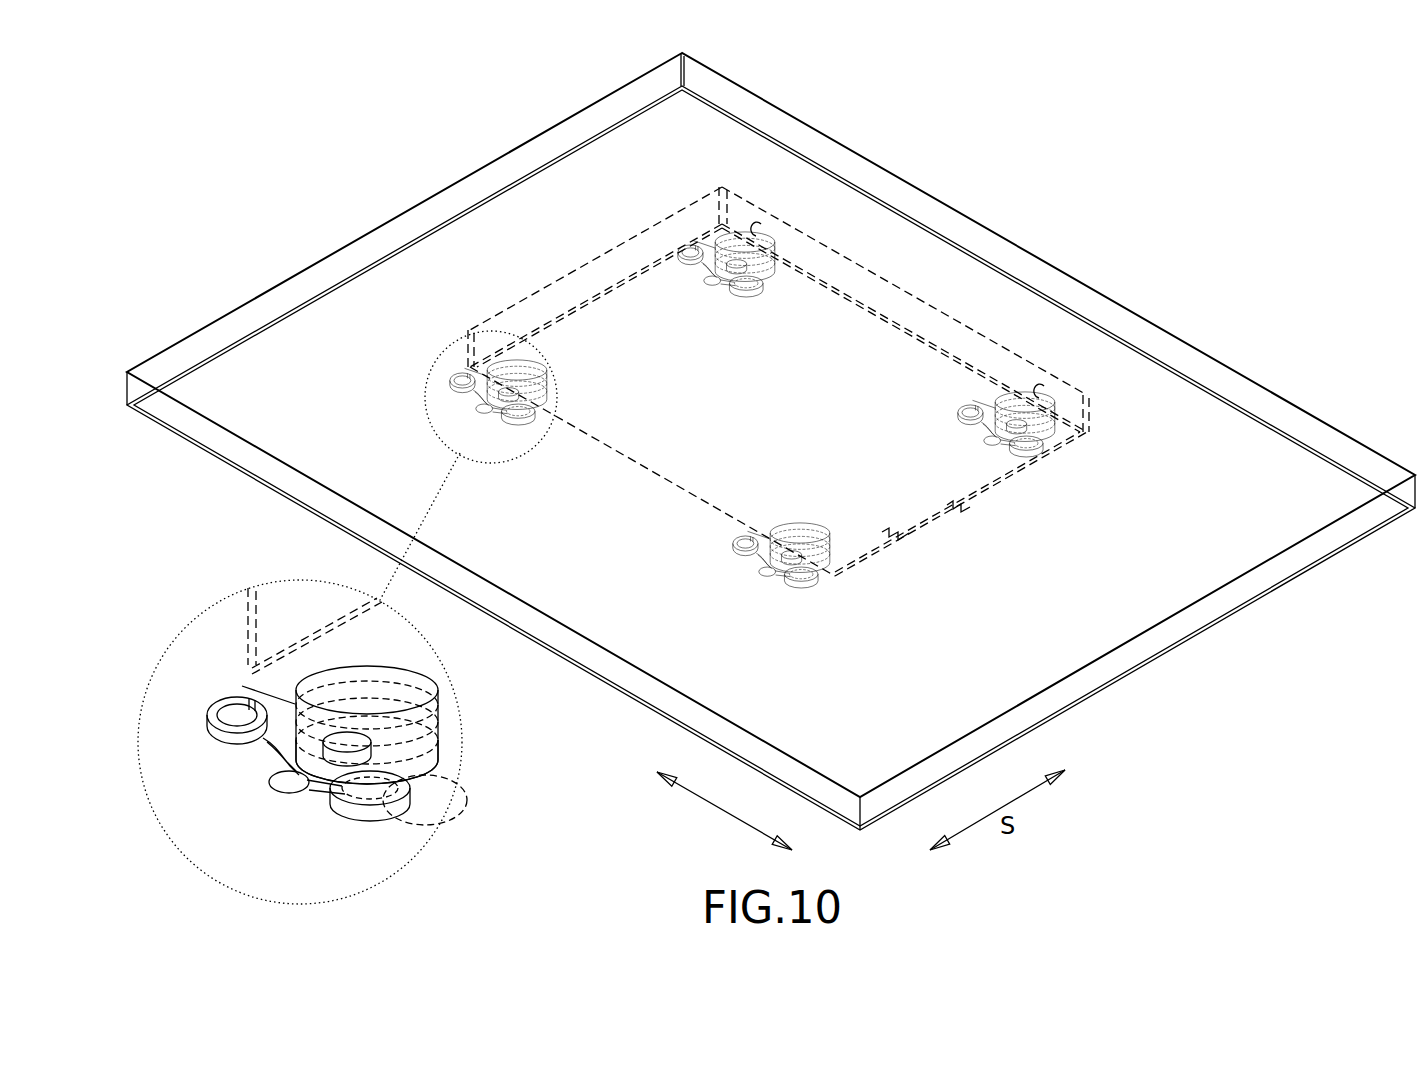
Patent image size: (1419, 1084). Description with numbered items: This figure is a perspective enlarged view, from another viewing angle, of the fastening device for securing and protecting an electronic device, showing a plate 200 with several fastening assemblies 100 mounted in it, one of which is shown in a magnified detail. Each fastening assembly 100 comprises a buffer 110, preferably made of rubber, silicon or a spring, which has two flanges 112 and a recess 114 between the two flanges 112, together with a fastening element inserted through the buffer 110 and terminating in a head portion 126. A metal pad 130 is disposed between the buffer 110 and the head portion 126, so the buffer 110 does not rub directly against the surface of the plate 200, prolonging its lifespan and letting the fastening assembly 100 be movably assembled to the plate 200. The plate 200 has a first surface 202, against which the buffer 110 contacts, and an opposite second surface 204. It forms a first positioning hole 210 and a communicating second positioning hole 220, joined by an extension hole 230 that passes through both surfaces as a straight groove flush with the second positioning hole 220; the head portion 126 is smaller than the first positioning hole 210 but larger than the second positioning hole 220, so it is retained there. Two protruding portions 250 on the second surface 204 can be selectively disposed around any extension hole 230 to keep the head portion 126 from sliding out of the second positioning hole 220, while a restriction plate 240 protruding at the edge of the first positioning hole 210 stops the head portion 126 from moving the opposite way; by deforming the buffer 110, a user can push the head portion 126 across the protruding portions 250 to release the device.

The fastening assembly 100 is at (254, 739).
The buffer 110 is at (454, 728).
The flanges 112 is at (438, 712).
The recess 114 is at (440, 732).
The head portion 126 is at (350, 807).
The pad 130 is at (437, 808).
The plate 200 is at (766, 473).
The first surface 202 is at (1253, 308).
The second surface 204 is at (1117, 608).
The first positioning hole 210 is at (257, 725).
The second positioning hole 220 is at (430, 840).
The extension hole 230 is at (330, 797).
The restriction plate 240 is at (217, 710).
The protruding portions 250 is at (373, 793).